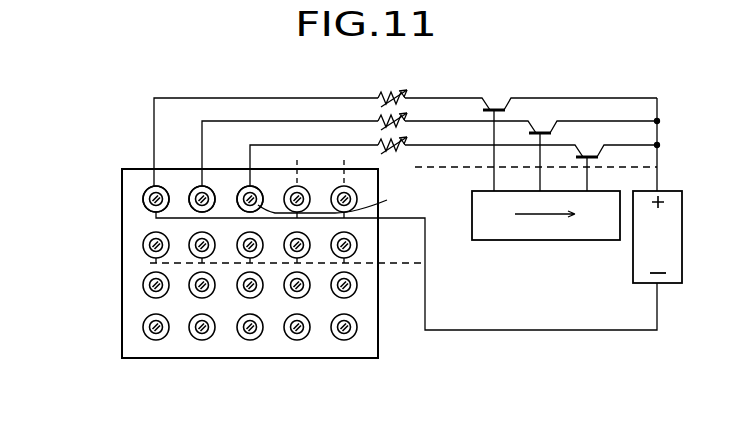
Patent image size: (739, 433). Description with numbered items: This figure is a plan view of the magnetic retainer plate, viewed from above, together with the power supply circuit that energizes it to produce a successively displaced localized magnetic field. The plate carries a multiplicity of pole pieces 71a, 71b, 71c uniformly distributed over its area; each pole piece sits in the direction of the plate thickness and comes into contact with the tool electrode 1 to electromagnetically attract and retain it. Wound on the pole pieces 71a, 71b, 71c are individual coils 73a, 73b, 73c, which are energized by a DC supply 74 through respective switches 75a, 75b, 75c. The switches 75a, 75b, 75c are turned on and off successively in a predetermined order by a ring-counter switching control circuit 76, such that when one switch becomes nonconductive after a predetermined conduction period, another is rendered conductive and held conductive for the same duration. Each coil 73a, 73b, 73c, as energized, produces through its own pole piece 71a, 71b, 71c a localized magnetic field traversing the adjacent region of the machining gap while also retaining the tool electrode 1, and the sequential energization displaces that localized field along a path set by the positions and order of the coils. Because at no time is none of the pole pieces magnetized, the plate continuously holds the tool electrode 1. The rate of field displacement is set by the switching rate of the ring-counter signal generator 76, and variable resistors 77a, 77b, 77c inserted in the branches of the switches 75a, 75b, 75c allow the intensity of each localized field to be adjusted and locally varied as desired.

The tool electrode 1 is at (275, 359).
The pole piece 71a is at (147, 199).
The pole piece 71b is at (195, 206).
The pole piece 71c is at (406, 257).
The coil 73a is at (148, 191).
The coil 73b is at (199, 187).
The coil 73c is at (248, 187).
The DC supply 74 is at (683, 240).
The switch 75a is at (494, 96).
The switch 75b is at (541, 128).
The switch 75c is at (587, 152).
The ring-counter switching control circuit 76 is at (532, 241).
The variable resistor 77a is at (378, 90).
The variable resistor 77b is at (378, 118).
The variable resistor 77c is at (400, 153).